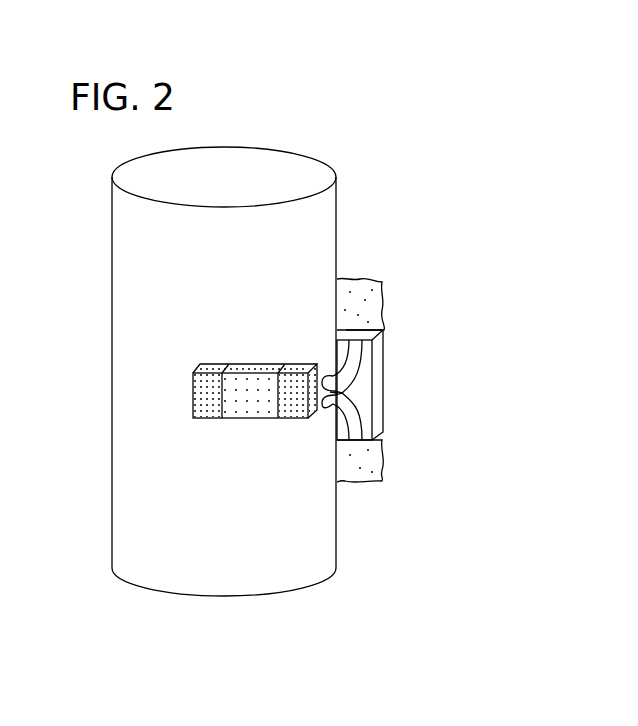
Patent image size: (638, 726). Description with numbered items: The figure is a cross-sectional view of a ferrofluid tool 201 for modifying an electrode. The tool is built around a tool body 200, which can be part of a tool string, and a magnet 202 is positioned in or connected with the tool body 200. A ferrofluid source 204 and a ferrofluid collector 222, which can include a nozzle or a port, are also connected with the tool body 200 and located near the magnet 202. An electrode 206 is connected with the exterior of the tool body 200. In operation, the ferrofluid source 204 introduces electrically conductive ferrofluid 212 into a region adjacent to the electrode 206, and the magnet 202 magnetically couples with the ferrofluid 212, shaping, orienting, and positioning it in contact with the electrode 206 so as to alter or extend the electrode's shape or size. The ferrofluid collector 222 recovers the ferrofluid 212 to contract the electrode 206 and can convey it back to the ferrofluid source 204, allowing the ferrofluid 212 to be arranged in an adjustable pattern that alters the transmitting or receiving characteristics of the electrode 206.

The ferrofluid tool 201 is at (288, 136).
The tool body 200 is at (324, 207).
The ferrofluid 212 is at (378, 282).
The electrode 206 is at (386, 376).
The ferrofluid source 204 is at (323, 376).
The ferrofluid collector 222 is at (332, 402).
The magnet 202 is at (248, 412).